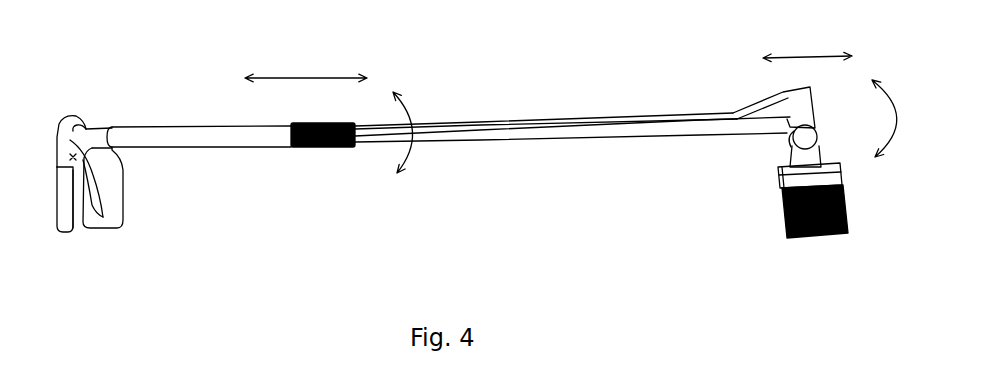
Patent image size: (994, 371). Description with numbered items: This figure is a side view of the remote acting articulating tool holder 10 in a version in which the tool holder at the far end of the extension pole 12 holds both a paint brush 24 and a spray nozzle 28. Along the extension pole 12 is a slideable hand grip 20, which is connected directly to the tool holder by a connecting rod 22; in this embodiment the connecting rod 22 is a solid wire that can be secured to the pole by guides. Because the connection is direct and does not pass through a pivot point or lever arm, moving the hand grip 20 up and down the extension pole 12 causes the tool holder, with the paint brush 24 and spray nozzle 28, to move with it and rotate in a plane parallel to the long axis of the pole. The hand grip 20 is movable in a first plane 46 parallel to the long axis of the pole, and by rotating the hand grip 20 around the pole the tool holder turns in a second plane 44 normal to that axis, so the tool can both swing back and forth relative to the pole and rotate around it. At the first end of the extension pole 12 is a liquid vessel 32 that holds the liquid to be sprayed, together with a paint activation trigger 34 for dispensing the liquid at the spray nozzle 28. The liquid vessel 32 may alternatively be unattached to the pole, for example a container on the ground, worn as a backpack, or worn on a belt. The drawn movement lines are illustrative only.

The remote acting articulating tool holder 10 is at (516, 226).
The extension pole 12 is at (605, 138).
The slideable hand grip 20 is at (333, 148).
The connecting rod 22 is at (757, 102).
The paint brush 24 is at (833, 175).
The spray nozzle 28 is at (810, 143).
The liquid vessel 32 is at (110, 202).
The paint activation trigger 34 is at (75, 228).
The second plane 44 is at (413, 110).
The first plane 46 is at (305, 78).